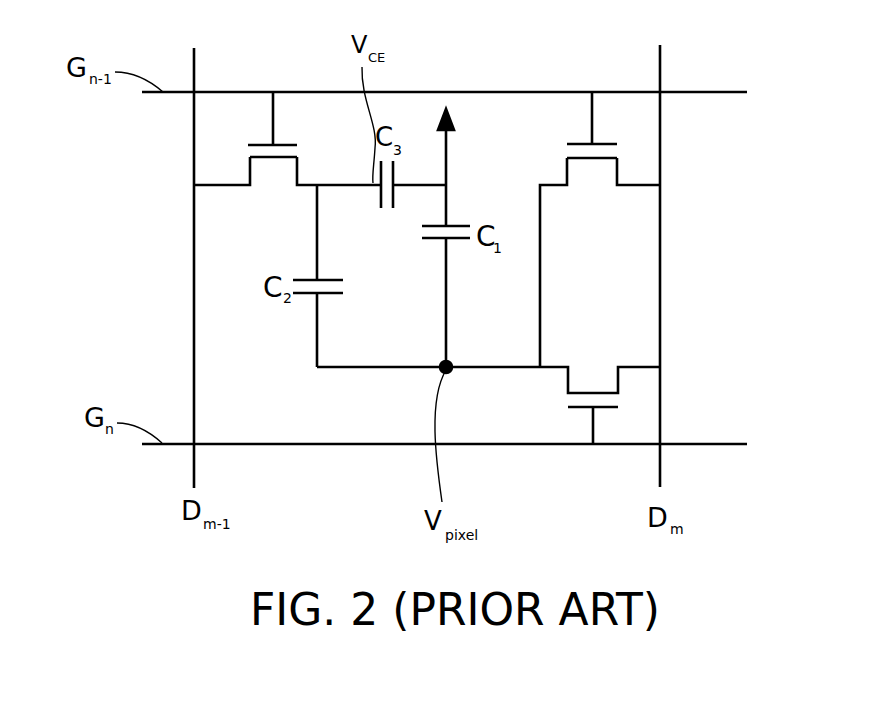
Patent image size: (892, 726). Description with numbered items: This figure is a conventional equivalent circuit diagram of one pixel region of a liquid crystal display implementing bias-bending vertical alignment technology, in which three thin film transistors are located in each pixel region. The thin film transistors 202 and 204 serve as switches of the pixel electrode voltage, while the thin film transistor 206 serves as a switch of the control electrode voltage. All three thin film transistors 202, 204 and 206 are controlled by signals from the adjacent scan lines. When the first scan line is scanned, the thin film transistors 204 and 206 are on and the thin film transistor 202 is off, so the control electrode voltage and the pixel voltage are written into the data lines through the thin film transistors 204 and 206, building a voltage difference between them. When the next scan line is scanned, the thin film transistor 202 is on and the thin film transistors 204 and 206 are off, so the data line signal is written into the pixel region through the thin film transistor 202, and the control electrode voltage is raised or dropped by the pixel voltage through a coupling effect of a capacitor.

The thin film transistor 202 is at (571, 400).
The thin film transistor 204 is at (565, 153).
The thin film transistor 206 is at (293, 150).